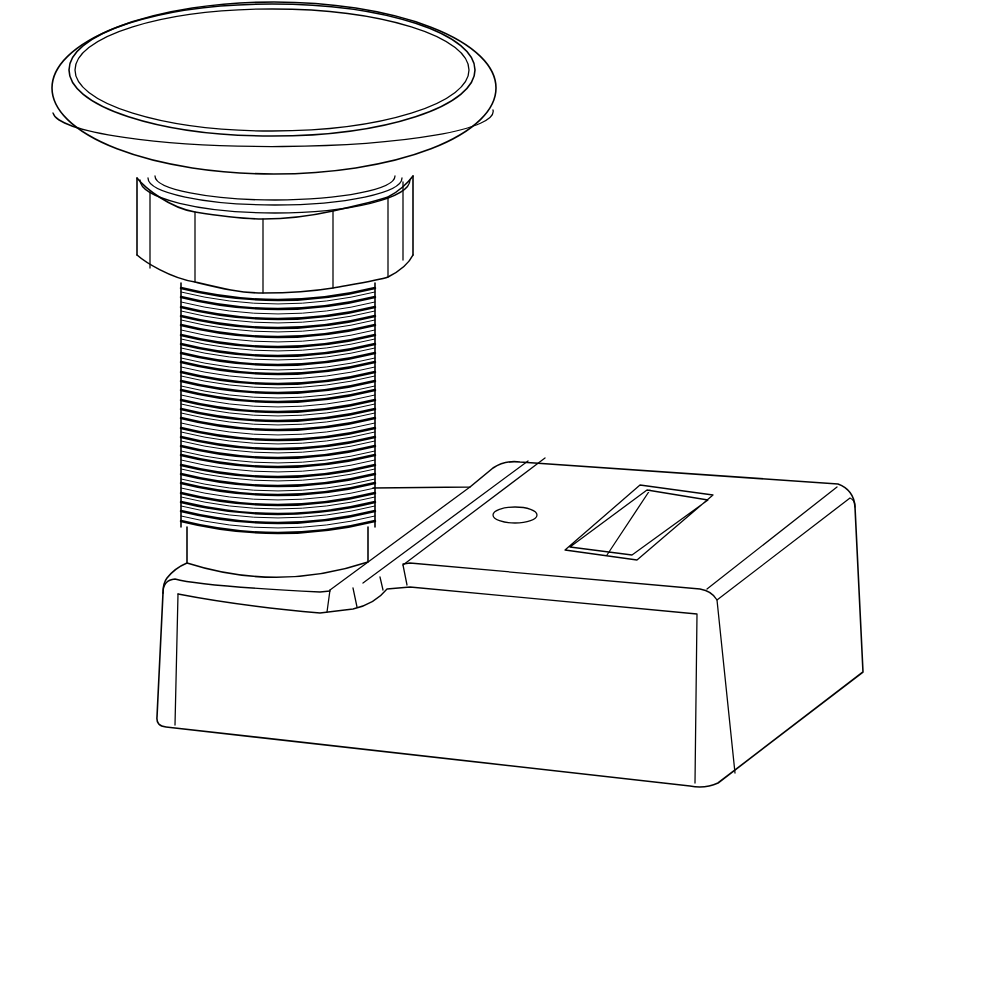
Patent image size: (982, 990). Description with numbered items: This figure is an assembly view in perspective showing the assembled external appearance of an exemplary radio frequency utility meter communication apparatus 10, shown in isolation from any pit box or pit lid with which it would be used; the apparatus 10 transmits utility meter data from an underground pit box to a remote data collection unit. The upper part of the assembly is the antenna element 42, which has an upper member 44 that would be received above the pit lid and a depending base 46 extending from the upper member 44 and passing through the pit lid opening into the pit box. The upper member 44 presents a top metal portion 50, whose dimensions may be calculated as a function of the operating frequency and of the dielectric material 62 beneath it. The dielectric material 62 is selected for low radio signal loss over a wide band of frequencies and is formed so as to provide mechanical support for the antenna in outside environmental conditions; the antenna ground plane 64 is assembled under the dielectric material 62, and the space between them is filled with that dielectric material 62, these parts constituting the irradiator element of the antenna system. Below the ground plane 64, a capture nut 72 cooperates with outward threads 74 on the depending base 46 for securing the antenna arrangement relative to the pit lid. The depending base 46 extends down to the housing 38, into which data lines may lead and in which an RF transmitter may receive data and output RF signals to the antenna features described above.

The radio frequency utility meter communication apparatus 10 is at (640, 272).
The housing 38 is at (633, 386).
The antenna element 42 is at (457, 278).
The upper member 44 is at (542, 132).
The depending base 46 is at (443, 432).
The top metal portion 50 is at (296, 74).
The dielectric material 62 is at (483, 108).
The antenna ground plane 64 is at (458, 157).
The capture nut 72 is at (415, 228).
The outward threads 74 is at (383, 350).